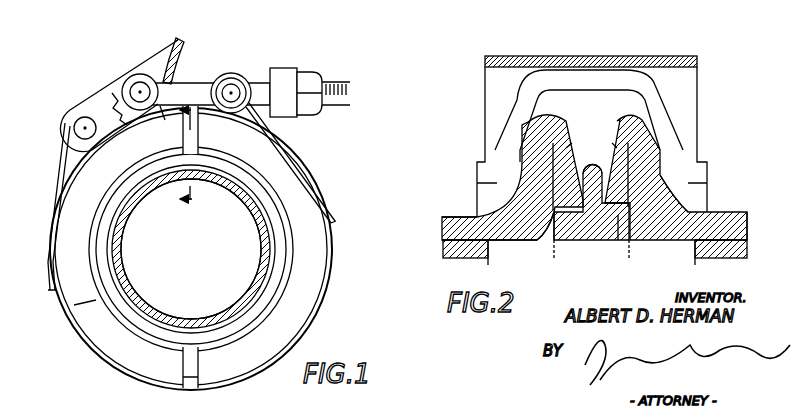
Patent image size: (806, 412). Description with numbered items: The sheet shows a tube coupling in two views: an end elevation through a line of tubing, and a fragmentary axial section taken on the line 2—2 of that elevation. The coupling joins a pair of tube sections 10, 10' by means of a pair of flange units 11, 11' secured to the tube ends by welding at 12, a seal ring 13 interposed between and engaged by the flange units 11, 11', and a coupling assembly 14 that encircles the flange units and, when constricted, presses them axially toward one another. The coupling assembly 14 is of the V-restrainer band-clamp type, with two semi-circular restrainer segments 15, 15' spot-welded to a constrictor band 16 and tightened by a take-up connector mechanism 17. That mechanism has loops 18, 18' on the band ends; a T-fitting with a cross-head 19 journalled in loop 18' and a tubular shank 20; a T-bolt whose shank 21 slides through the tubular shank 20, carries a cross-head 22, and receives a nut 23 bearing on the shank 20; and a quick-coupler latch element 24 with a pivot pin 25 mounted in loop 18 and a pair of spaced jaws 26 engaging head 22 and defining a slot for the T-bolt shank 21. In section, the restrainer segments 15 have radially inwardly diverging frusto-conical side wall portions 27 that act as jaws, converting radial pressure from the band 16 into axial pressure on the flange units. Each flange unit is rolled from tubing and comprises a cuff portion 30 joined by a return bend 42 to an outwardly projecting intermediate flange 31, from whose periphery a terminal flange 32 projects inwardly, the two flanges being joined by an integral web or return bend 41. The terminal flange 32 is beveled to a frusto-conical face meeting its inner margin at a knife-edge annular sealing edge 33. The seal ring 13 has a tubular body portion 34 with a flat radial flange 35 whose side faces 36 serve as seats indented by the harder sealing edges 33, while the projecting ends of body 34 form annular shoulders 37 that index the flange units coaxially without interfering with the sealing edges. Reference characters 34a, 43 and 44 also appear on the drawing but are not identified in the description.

In FIG. 1, the section line 2 is at (189, 238).
In FIG. 1, the tube section 10 is at (191, 251).
In FIG. 2, the tube section 10 is at (740, 260).
In FIG. 2, the tube section 10' is at (446, 252).
In FIG. 2, the flange unit 11 is at (716, 192).
In FIG. 2, the flange unit 11' is at (472, 198).
In FIG. 2, the weld 12 is at (748, 244).
In FIG. 2, the seal ring 13 is at (574, 245).
In FIG. 1, the coupling assembly 14 is at (100, 362).
In FIG. 2, the coupling assembly 14 is at (703, 82).
In FIG. 1, the restrainer segment 15 is at (225, 249).
In FIG. 2, the restrainer segment 15 is at (576, 126).
In FIG. 1, the restrainer segment 15' is at (66, 306).
In FIG. 1, the constrictor band 16 is at (326, 296).
In FIG. 2, the constrictor band 16 is at (485, 61).
In FIG. 1, the take-up connector mechanism 17 is at (292, 126).
In FIG. 1, the loop 18 is at (51, 206).
In FIG. 1, the loop 18' is at (266, 139).
In FIG. 1, the cross-head 19 is at (229, 74).
In FIG. 1, the tubular shank 20 is at (258, 72).
In FIG. 1, the T-bolt shank 21 is at (176, 88).
In FIG. 1, the cross-head 22 is at (130, 79).
In FIG. 1, the nut 23 is at (322, 116).
In FIG. 1, the quick-coupler latch element 24 is at (98, 104).
In FIG. 1, the pivot pin 25 is at (82, 126).
In FIG. 1, the spaced jaws 26 is at (165, 112).
In FIG. 2, the frusto-conical side wall portions 27 is at (671, 138).
In FIG. 1, the cuff portion 30 is at (117, 262).
In FIG. 2, the cuff portion 30 is at (442, 228).
In FIG. 1, the intermediate flange 31 is at (276, 284).
In FIG. 2, the intermediate flange 31 is at (543, 158).
In FIG. 2, the terminal flange 32 is at (618, 153).
In FIG. 2, the annular sealing edge 33 is at (545, 222).
In FIG. 2, the tubular body portion 34 is at (620, 236).
In FIG. 2, the hub shoulder 34a is at (649, 6).
In FIG. 2, the flat radial flange 35 is at (593, 210).
In FIG. 2, the side faces 36 is at (588, 170).
In FIG. 2, the annular shoulders 37 is at (617, 212).
In FIG. 2, the return bend 41 is at (552, 118).
In FIG. 2, the return bend 42 is at (668, 222).
In FIG. 2, the element 43 is at (586, 6).
In FIG. 2, the element 44 is at (540, 6).